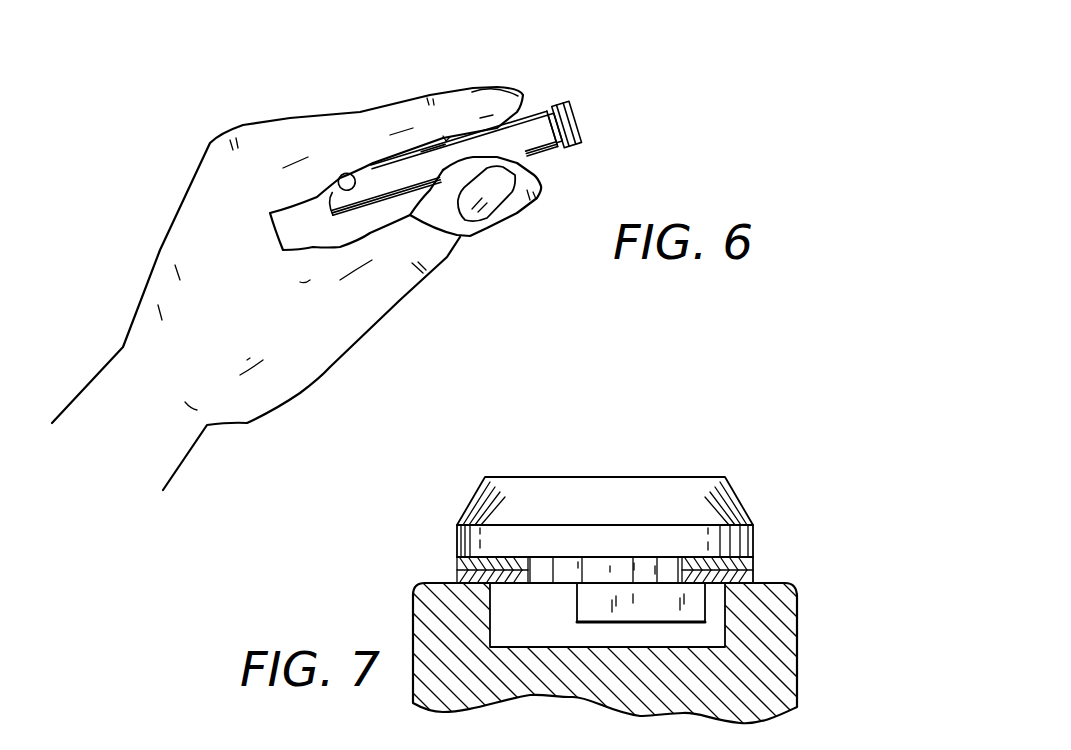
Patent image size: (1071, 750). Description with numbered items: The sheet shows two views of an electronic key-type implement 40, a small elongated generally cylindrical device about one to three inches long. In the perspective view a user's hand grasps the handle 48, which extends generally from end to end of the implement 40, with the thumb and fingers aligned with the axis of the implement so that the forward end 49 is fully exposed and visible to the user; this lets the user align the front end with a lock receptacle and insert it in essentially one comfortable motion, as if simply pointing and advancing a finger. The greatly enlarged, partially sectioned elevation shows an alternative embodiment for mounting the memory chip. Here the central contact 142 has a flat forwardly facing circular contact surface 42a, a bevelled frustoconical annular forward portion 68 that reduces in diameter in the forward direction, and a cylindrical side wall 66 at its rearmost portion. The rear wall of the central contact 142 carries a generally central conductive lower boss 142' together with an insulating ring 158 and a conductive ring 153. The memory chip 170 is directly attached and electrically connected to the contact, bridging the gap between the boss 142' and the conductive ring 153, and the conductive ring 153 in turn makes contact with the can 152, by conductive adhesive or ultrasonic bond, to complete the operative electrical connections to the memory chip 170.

In FIG. 6, the implement 40 is at (392, 173).
In FIG. 6, the handle 48 is at (428, 165).
In FIG. 6, the forward end 49 is at (570, 113).
In FIG. 7, the contact surface 42a is at (593, 477).
In FIG. 7, the bevelled frustoconical annular forward portion 68 is at (467, 508).
In FIG. 7, the cylindrical side wall 66 is at (457, 543).
In FIG. 7, the central contact 142 is at (765, 473).
In FIG. 7, the insulating ring 158 is at (757, 567).
In FIG. 7, the conductive ring 153 is at (757, 578).
In FIG. 7, the conductive lower boss 142' is at (604, 598).
In FIG. 7, the memory chip 170 is at (582, 624).
In FIG. 7, the can 152 is at (797, 650).